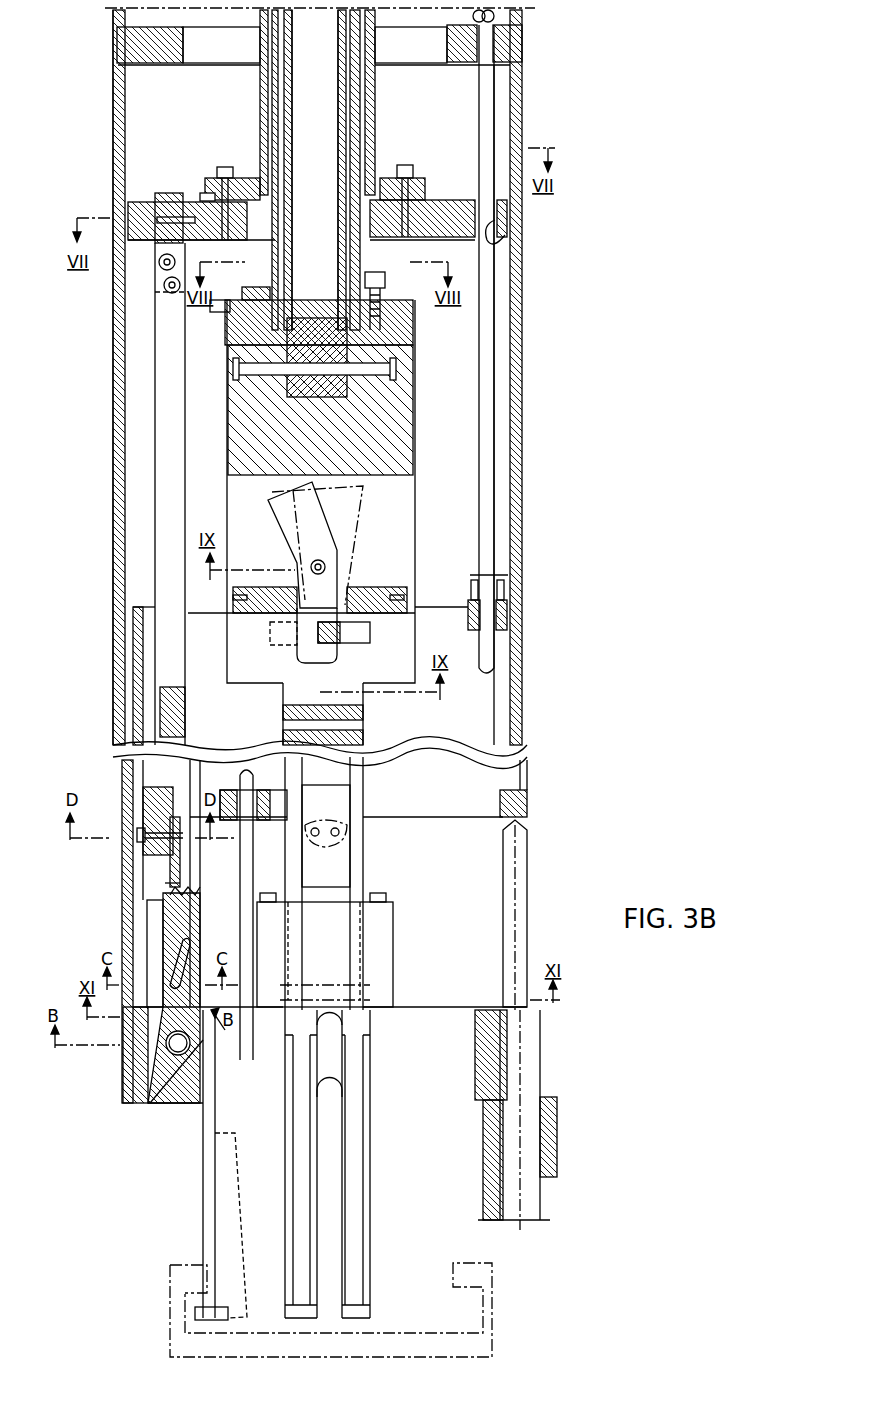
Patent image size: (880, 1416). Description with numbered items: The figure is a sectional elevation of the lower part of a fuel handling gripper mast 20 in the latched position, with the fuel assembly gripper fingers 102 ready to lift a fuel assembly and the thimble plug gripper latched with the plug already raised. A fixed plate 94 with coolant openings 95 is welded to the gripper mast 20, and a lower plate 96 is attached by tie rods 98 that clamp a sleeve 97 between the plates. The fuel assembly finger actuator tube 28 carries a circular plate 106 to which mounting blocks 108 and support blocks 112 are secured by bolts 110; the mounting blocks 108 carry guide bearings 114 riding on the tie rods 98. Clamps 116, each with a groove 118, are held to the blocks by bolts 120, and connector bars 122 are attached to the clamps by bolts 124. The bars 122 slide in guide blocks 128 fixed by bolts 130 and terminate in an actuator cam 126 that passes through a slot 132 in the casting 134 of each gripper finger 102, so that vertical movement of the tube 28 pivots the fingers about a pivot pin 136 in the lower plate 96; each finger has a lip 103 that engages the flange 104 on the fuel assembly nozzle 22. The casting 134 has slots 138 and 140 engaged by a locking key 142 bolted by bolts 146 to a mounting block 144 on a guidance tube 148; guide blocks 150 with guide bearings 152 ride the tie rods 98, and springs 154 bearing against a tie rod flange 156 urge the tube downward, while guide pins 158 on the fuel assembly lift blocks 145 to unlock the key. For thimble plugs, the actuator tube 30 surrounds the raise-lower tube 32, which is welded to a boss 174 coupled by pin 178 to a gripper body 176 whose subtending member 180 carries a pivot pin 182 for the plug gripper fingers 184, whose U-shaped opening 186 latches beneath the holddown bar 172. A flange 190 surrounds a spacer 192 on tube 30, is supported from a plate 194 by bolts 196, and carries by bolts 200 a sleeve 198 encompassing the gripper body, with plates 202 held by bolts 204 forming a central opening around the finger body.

The gripper mast 20 is at (113, 18).
The fuel assembly nozzle 22 is at (423, 1335).
The fuel assembly finger actuator tube 28 is at (260, 78).
The thimble plug actuator tube 30 is at (280, 62).
The thimble plug raise-lower tube 32 is at (293, 90).
The fixed plate 94 is at (522, 43).
The coolant openings 95 is at (200, 50).
The lower plate 96 is at (125, 1090).
The sleeve 97 is at (113, 383).
The tie rods 98 is at (497, 322).
The gripper fingers 102 is at (355, 1175).
The lip 103 is at (355, 1300).
The flange 104 is at (185, 1296).
The circular plate 106 is at (425, 190).
The mounting blocks 108 is at (215, 190).
The bolts 110 is at (405, 165).
The support blocks 112 is at (455, 200).
The guide bearings 114 is at (507, 240).
The clamps 116 is at (165, 193).
The groove 118 is at (207, 193).
The bolts 120 is at (130, 215).
The connector bars 122 is at (155, 430).
The bolts 124 is at (164, 288).
The actuator cam 126 is at (190, 955).
The guide blocks 128 is at (385, 915).
The bolts 130 is at (378, 893).
The slot 132 is at (165, 950).
The casting 134 is at (178, 1055).
The pivot pin 136 is at (158, 1098).
The slot 138 is at (175, 883).
The slot 140 is at (195, 890).
The locking key 142 is at (170, 840).
The mounting block 144 is at (150, 800).
The blocks 145 is at (527, 803).
The bolts 146 is at (140, 830).
The guidance tube 148 is at (133, 655).
The guide blocks 150 is at (495, 640).
The guide bearing 152 is at (507, 607).
The spring 154 is at (505, 585).
The tie rod flange 156 is at (490, 575).
The guide pins 158 is at (527, 862).
The holddown bar 172 is at (340, 650).
The boss 174 is at (318, 322).
The gripper body 176 is at (385, 437).
The pin 178 is at (375, 372).
The subtending member 180 is at (340, 510).
The pivot pin 182 is at (326, 557).
The gripper fingers 184 is at (278, 520).
The U-shaped opening 186 is at (287, 645).
The flange 190 is at (400, 337).
The spacer 192 is at (277, 300).
The plate 194 is at (388, 300).
The bolts 196 is at (375, 272).
The sleeve 198 is at (227, 425).
The bolts 200 is at (222, 313).
The plates 202 is at (395, 590).
The bolts 204 is at (235, 600).